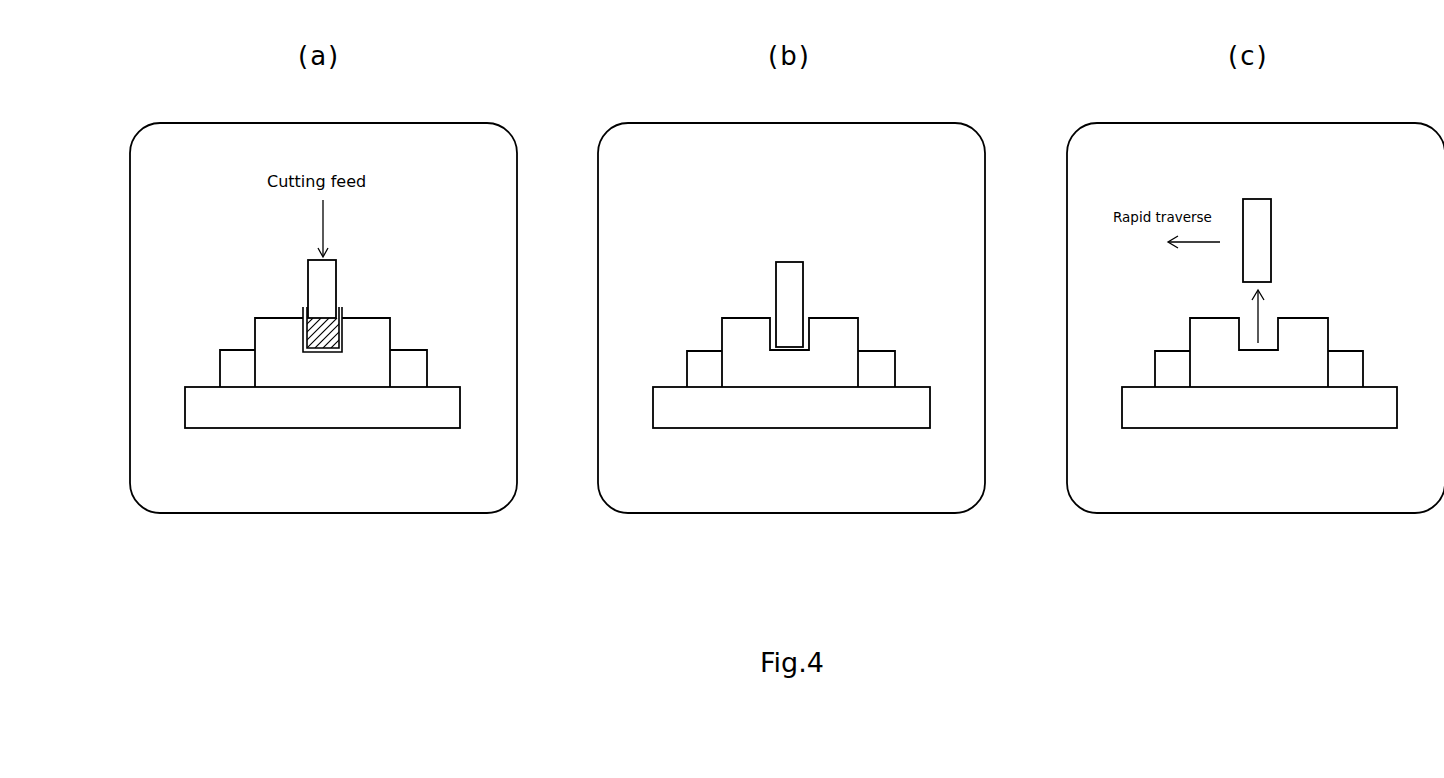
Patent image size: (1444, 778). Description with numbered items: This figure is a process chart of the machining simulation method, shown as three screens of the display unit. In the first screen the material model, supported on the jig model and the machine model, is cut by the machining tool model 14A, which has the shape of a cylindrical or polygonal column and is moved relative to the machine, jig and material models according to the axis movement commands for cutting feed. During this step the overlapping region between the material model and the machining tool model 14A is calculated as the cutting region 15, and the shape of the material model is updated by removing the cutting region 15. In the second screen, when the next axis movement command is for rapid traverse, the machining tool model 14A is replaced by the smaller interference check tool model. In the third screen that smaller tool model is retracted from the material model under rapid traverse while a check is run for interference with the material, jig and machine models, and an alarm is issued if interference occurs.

The machining tool model 14A is at (308, 270).
The cutting region 15 is at (325, 312).